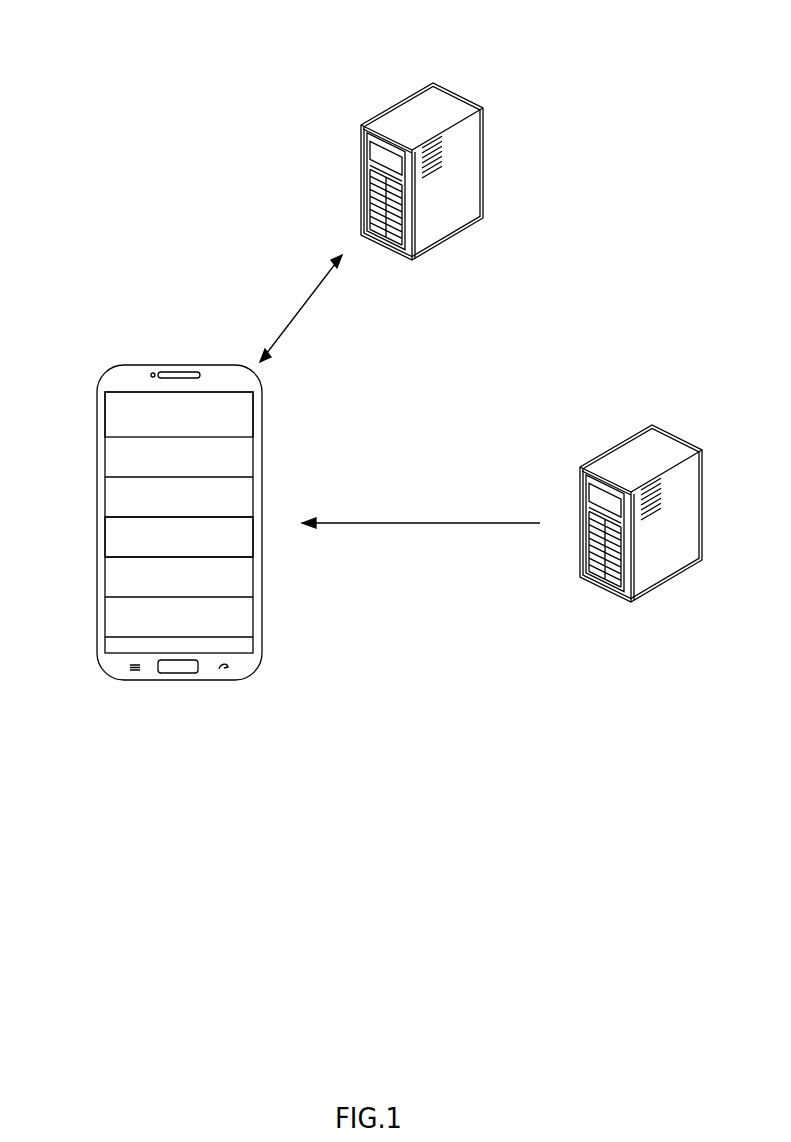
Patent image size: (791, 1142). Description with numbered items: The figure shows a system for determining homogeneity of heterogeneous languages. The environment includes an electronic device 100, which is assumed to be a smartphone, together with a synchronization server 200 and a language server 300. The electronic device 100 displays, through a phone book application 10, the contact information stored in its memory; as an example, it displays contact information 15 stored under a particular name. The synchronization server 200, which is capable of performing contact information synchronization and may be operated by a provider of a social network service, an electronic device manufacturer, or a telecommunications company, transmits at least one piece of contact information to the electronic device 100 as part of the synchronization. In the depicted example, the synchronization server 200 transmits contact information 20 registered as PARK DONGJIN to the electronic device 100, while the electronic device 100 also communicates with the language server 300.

The electronic device 100 is at (151, 486).
The phone book application 10 is at (105, 414).
The contact information 15 is at (105, 537).
The contact information 20 is at (427, 560).
The synchronization server 200 is at (652, 427).
The language server 300 is at (433, 81).